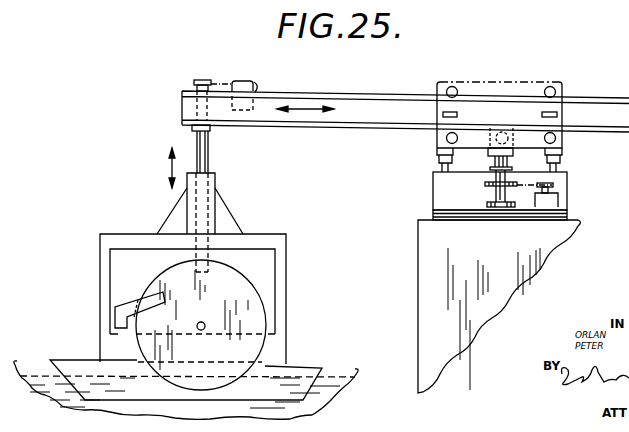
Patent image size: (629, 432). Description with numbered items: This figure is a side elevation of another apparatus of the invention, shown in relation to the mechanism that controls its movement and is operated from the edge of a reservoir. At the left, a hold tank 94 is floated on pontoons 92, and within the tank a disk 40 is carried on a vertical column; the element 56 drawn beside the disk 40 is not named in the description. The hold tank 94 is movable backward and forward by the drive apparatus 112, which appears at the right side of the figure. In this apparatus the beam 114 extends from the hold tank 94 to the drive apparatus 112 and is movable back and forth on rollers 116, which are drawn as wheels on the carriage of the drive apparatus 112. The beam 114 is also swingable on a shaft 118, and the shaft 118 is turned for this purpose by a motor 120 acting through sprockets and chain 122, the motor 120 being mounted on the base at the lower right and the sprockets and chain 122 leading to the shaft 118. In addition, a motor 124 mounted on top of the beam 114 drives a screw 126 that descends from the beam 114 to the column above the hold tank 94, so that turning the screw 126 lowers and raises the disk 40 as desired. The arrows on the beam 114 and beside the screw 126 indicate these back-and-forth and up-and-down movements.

The disk 40 is at (258, 296).
The blade 56 is at (127, 305).
The pontoons 92 is at (328, 370).
The hold tank 94 is at (272, 341).
The drive apparatus 112 is at (570, 147).
The beam 114 is at (390, 105).
The rollers 116 is at (452, 85).
The shaft 118 is at (498, 158).
The motor 120 is at (554, 196).
The sprockets and chain 122 is at (507, 186).
The motor 124 is at (255, 84).
The screw 126 is at (212, 173).